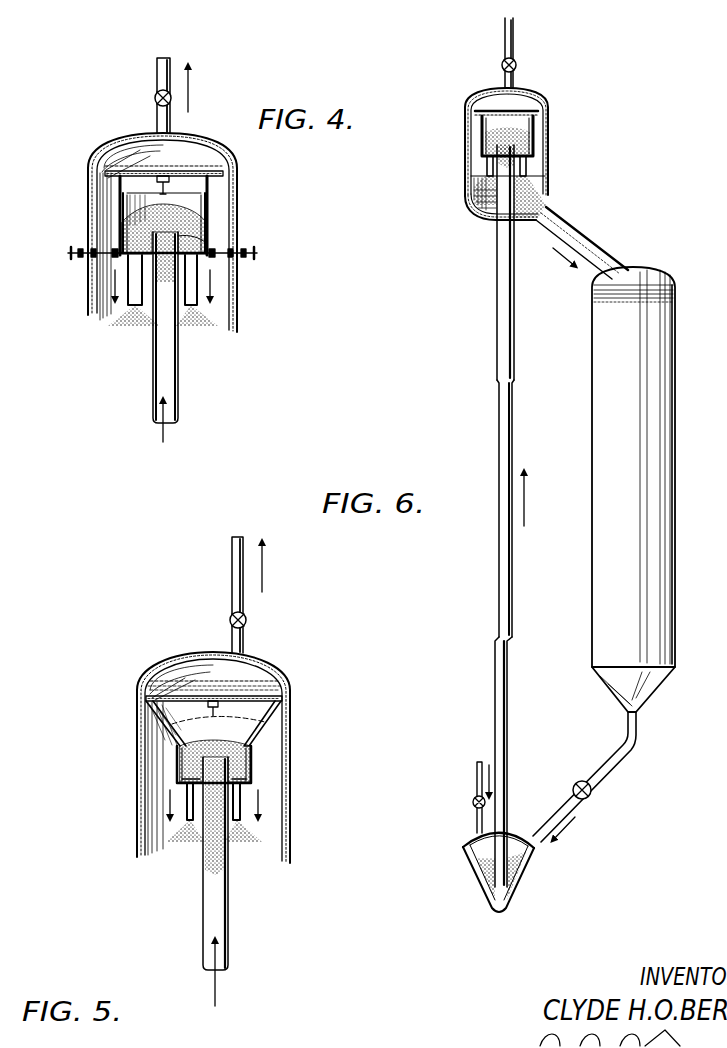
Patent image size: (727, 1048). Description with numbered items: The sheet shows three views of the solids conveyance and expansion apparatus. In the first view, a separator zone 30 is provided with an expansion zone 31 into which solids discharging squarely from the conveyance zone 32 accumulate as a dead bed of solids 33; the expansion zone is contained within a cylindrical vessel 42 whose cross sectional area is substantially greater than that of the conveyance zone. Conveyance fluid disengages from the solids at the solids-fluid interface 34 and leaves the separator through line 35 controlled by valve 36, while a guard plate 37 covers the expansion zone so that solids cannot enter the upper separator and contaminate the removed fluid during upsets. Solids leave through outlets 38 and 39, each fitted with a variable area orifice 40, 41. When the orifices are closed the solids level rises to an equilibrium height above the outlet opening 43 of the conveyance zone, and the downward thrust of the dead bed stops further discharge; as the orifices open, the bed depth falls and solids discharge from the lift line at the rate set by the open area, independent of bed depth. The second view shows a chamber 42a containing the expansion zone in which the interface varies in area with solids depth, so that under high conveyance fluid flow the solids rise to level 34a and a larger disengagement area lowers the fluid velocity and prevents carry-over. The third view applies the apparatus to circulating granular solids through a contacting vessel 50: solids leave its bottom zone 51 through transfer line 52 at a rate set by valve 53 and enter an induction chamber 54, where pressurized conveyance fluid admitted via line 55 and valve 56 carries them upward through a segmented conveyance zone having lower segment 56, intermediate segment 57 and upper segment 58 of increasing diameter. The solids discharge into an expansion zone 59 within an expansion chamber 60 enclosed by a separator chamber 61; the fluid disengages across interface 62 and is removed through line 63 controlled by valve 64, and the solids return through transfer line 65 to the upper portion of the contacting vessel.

In FIG. 4, the separator zone 30 is at (213, 214).
In FIG. 5, the separator zone 30 is at (257, 756).
In FIG. 4, the expansion zone 31 is at (225, 253).
In FIG. 5, the expansion zone 31 is at (250, 780).
In FIG. 4, the conveyance zone 32 is at (180, 411).
In FIG. 5, the conveyance zone 32 is at (205, 905).
In FIG. 4, the dead bed of solids 33 is at (130, 214).
In FIG. 4, the solids-fluid interface 34 is at (190, 207).
In FIG. 5, the solids-fluid interface 34 is at (262, 735).
In FIG. 5, the raised solids level 34a is at (170, 720).
In FIG. 4, the line 35 is at (157, 68).
In FIG. 5, the line 35 is at (232, 572).
In FIG. 4, the valve 36 is at (155, 98).
In FIG. 5, the valve 36 is at (230, 619).
In FIG. 4, the guard plate 37 is at (198, 170).
In FIG. 5, the guard plate 37 is at (265, 692).
In FIG. 4, the outlet 38 is at (210, 312).
In FIG. 5, the outlet 38 is at (255, 826).
In FIG. 4, the outlet 39 is at (135, 270).
In FIG. 5, the outlet 39 is at (190, 793).
In FIG. 4, the variable area orifice 40 is at (197, 262).
In FIG. 5, the variable area orifice 40 is at (240, 790).
In FIG. 4, the variable area orifice 41 is at (118, 243).
In FIG. 5, the variable area orifice 41 is at (178, 775).
In FIG. 4, the cylindrical vessel 42 is at (118, 203).
In FIG. 5, the chamber 42a is at (165, 731).
In FIG. 4, the outlet opening 43 is at (185, 232).
In FIG. 5, the outlet opening 43 is at (190, 750).
In FIG. 6, the contacting vessel 50 is at (640, 376).
In FIG. 6, the bottom zone 51 is at (652, 698).
In FIG. 6, the transfer line 52 is at (612, 766).
In FIG. 6, the valve 53 is at (590, 796).
In FIG. 6, the induction chamber 54 is at (492, 886).
In FIG. 6, the line 55 is at (497, 569).
In FIG. 6, the valve 56 is at (506, 762).
In FIG. 6, the intermediate segment 57 is at (510, 603).
In FIG. 6, the upper segment 58 is at (513, 317).
In FIG. 6, the expansion zone 59 is at (520, 158).
In FIG. 6, the expansion chamber 60 is at (534, 136).
In FIG. 6, the separator chamber 61 is at (542, 104).
In FIG. 6, the interface 62 is at (478, 115).
In FIG. 6, the line 63 is at (514, 64).
In FIG. 6, the valve 64 is at (502, 65).
In FIG. 6, the transfer line 65 is at (620, 232).